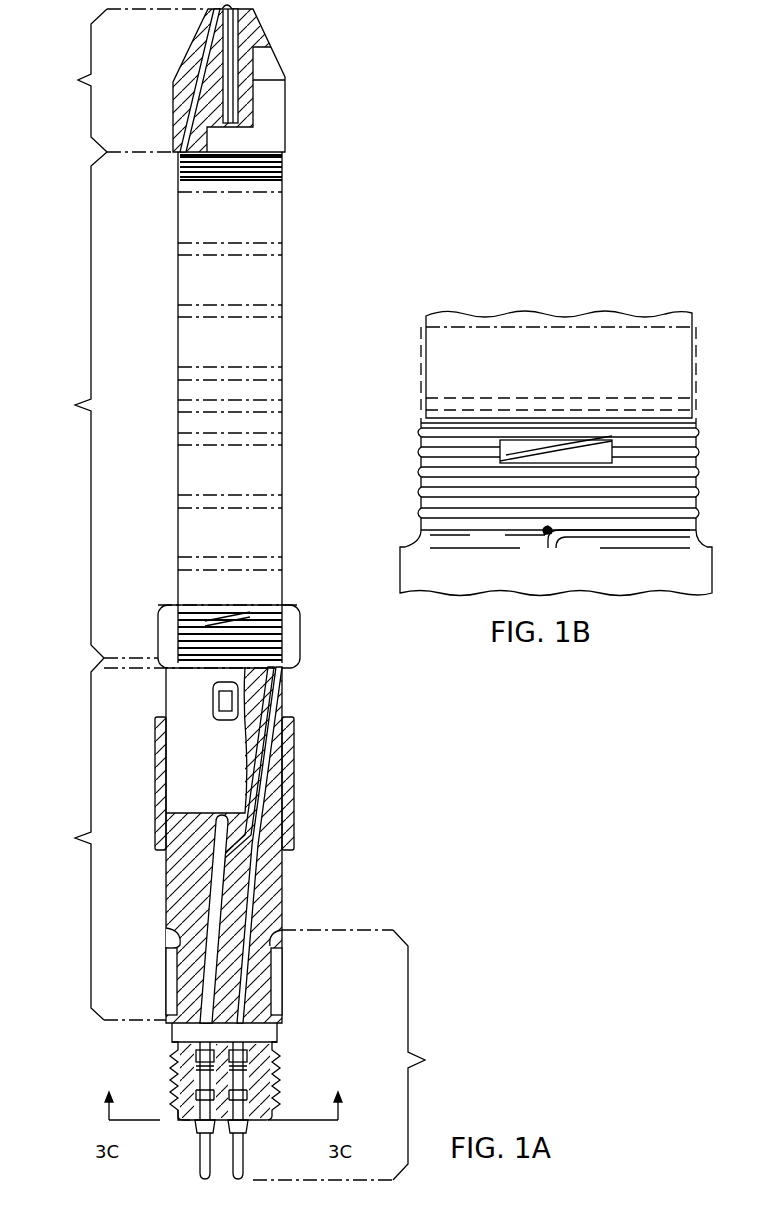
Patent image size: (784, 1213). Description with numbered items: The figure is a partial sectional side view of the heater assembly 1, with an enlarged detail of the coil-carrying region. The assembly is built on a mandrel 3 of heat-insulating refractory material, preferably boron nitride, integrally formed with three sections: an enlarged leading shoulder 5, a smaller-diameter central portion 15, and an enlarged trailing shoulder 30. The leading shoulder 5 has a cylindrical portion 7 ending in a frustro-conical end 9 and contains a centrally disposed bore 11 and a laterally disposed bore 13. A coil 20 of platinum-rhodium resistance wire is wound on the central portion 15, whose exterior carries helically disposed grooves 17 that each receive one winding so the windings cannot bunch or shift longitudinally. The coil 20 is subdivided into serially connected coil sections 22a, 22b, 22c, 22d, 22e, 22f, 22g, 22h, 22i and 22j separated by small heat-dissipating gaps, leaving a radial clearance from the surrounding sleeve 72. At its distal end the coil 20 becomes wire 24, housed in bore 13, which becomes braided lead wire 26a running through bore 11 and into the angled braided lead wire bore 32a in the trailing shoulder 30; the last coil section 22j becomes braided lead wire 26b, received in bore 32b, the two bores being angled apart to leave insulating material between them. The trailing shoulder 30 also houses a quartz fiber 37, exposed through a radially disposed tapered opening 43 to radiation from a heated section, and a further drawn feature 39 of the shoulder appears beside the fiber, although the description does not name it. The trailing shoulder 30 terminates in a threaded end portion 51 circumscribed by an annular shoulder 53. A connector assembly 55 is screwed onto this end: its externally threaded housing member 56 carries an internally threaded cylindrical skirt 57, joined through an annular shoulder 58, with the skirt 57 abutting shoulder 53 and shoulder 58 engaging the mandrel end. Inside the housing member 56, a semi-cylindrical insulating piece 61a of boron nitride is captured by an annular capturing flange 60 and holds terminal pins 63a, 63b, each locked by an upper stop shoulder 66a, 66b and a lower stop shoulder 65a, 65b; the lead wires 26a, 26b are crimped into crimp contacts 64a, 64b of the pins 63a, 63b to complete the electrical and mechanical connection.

In FIG. 1A, the heater assembly 1 is at (84, 46).
In FIG. 1A, the leading shoulder 5 is at (115, 80).
In FIG. 1A, the central portion 15 is at (97, 405).
In FIG. 1A, the trailing shoulder 30 is at (102, 839).
In FIG. 1B, the trailing shoulder 30 is at (577, 578).
In FIG. 1A, the connector assembly 55 is at (357, 1055).
In FIG. 1A, the mandrel 3 is at (232, 359).
In FIG. 1B, the mandrel 3 is at (583, 373).
In FIG. 1A, the cylindrical portion 7 is at (272, 134).
In FIG. 1A, the frustro-conical end 9 is at (273, 60).
In FIG. 1A, the centrally disposed bore 11 is at (242, 30).
In FIG. 1A, the laterally disposed bore 13 is at (212, 37).
In FIG. 1A, the coil 20 is at (288, 168).
In FIG. 1A, the wire 24 is at (195, 96).
In FIG. 1A, the braided lead wire 26a is at (232, 90).
In FIG. 1A, the braided lead wire 26b is at (258, 868).
In FIG. 1A, the coil section 22a is at (192, 184).
In FIG. 1A, the coil section 22b is at (192, 226).
In FIG. 1A, the coil section 22c is at (192, 274).
In FIG. 1A, the coil section 22d is at (192, 347).
In FIG. 1A, the coil section 22e is at (192, 385).
In FIG. 1A, the coil section 22f is at (192, 418).
In FIG. 1A, the coil section 22g is at (192, 477).
In FIG. 1A, the coil section 22h is at (192, 530).
In FIG. 1A, the coil section 22i is at (192, 578).
In FIG. 1B, the coil section 22i is at (456, 398).
In FIG. 1A, the coil section 22j is at (186, 631).
In FIG. 1B, the coil section 22j is at (507, 488).
In FIG. 1B, the helically disposed grooves 17 is at (426, 440).
In FIG. 1A, the braided lead wire bore 32a is at (246, 907).
In FIG. 1A, the braided lead wire bore 32b is at (266, 795).
In FIG. 1A, the quartz fiber 37 is at (235, 708).
In FIG. 1A, the housing wall 39 is at (272, 690).
In FIG. 1A, the tapered opening 43 is at (214, 693).
In FIG. 1A, the threaded end portion 51 is at (172, 970).
In FIG. 1A, the annular shoulder 53 is at (168, 940).
In FIG. 1A, the housing member 56 is at (180, 1120).
In FIG. 1A, the cylindrical skirt 57 is at (272, 960).
In FIG. 1A, the annular shoulder 58 is at (175, 1026).
In FIG. 1A, the capturing flange 60 is at (250, 1124).
In FIG. 1A, the semi-cylindrical insulating piece 61a is at (262, 1067).
In FIG. 1A, the terminal pin 63a is at (203, 1160).
In FIG. 1A, the terminal pin 63b is at (240, 1160).
In FIG. 1A, the crimp contact 64a is at (204, 1077).
In FIG. 1A, the crimp contact 64b is at (240, 1050).
In FIG. 1A, the lower stop shoulder 65a is at (190, 1101).
In FIG. 1A, the lower stop shoulder 65b is at (270, 1098).
In FIG. 1A, the upper stop shoulder 66a is at (195, 1092).
In FIG. 1A, the upper stop shoulder 66b is at (258, 1062).
In FIG. 1A, the sleeve 72 is at (292, 752).